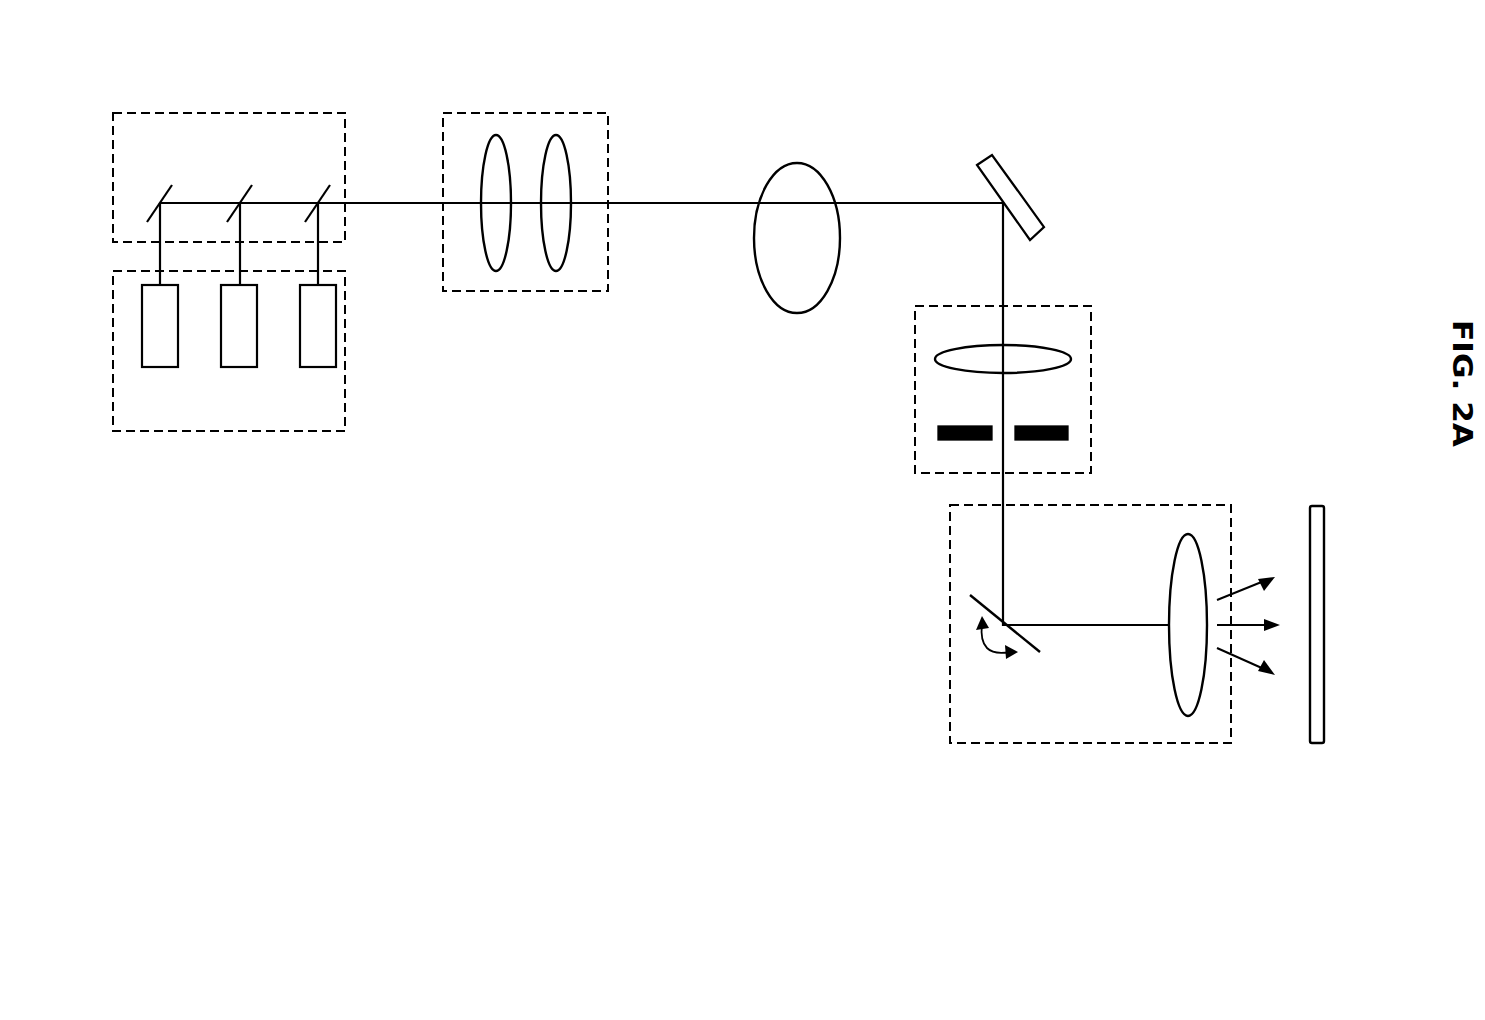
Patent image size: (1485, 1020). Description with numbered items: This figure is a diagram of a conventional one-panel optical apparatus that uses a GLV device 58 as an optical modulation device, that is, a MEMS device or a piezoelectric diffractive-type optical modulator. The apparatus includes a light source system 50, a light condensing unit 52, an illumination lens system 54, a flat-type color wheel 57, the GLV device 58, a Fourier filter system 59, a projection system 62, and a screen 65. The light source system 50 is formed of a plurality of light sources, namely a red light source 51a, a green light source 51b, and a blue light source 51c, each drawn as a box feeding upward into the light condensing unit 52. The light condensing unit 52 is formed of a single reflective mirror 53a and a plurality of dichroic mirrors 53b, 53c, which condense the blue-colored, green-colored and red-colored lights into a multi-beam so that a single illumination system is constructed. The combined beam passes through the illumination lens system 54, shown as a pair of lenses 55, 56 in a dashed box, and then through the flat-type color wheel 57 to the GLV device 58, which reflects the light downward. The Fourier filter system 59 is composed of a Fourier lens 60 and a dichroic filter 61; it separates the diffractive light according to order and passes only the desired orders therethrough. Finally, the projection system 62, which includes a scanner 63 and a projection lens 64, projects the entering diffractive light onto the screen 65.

The light source system 50 is at (229, 363).
The red light source 51a is at (160, 368).
The green light source 51b is at (240, 368).
The blue light source 51c is at (318, 368).
The light condensing unit 52 is at (229, 131).
The reflective mirror 53a is at (171, 186).
The dichroic mirror 53b is at (251, 186).
The dichroic mirror 53c is at (329, 186).
The illumination lens system 54 is at (525, 187).
The lens 55 is at (497, 270).
The lens 56 is at (557, 270).
The flat-type color wheel 57 is at (798, 163).
The GLV device 58 is at (1022, 190).
The Fourier filter system 59 is at (1019, 389).
The Fourier lens 60 is at (935, 359).
The dichroic filter 61 is at (938, 432).
The projection system 62 is at (1090, 579).
The scanner 63 is at (1028, 649).
The projection lens 64 is at (1170, 668).
The screen 65 is at (1324, 625).